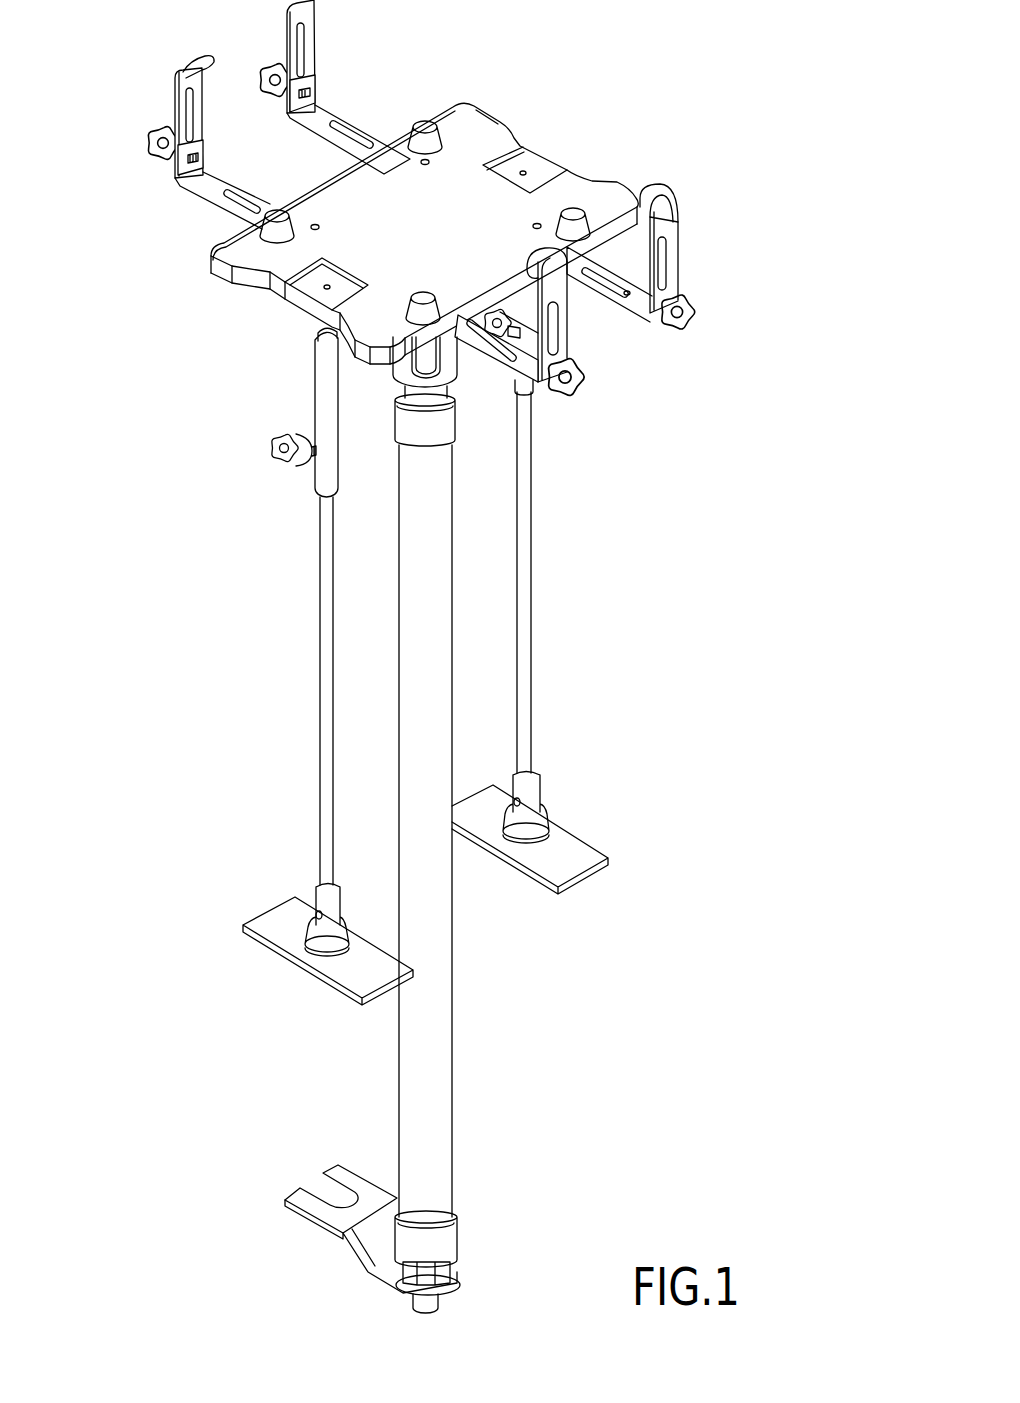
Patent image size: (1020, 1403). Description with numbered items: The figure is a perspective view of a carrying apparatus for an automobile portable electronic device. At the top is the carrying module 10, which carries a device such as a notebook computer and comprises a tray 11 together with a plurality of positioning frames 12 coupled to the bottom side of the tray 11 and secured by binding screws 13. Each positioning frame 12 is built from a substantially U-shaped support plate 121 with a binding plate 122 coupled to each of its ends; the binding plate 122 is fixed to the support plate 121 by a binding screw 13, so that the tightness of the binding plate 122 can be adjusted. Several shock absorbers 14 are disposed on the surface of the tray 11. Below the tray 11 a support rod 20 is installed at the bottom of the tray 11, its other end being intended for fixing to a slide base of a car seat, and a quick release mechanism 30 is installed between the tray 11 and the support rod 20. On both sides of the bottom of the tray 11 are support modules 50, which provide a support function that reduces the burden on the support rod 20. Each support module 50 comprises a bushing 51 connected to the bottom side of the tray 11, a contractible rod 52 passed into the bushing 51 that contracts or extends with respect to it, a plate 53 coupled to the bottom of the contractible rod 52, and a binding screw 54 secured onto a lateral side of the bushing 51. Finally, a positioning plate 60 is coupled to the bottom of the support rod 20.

The carrying module 10 is at (550, 154).
The tray 11 is at (470, 128).
The positioning frame 12 is at (206, 198).
The support plate 121 is at (203, 183).
The binding plate 122 is at (177, 97).
The binding screw 13 is at (165, 137).
The shock absorber 14 is at (427, 125).
The support rod 20 is at (458, 966).
The quick release mechanism 30 is at (462, 367).
The support module 50 is at (315, 589).
The bushing 51 is at (320, 394).
The contractible rod 52 is at (323, 541).
The plate 53 is at (275, 918).
The binding screw 54 is at (273, 447).
The positioning plate 60 is at (341, 1247).